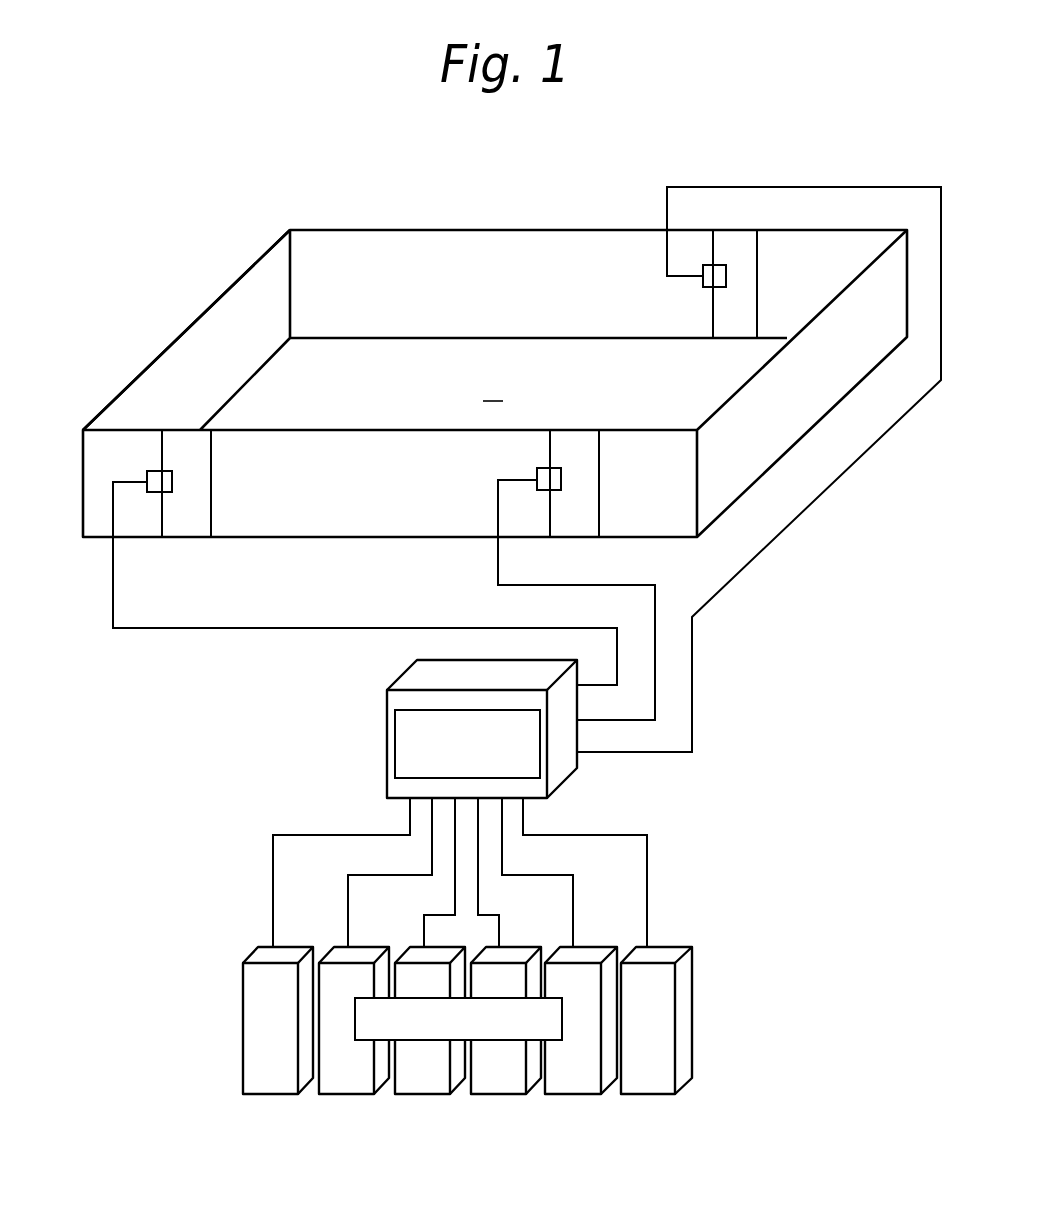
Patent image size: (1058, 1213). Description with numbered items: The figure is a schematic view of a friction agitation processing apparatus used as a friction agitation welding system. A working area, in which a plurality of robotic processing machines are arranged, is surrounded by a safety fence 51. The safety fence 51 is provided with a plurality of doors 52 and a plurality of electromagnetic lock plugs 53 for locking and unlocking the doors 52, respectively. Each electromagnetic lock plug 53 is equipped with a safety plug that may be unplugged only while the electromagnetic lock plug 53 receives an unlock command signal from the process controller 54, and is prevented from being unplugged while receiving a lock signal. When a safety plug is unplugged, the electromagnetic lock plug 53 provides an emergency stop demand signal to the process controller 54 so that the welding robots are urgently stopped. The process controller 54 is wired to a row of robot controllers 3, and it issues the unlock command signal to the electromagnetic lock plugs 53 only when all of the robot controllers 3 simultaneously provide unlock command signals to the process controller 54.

The safety fence 51 is at (365, 228).
The doors 52 is at (200, 458).
The electromagnetic lock plugs 53 is at (165, 492).
The process controller 54 is at (387, 705).
The robot controllers 3 is at (265, 1095).